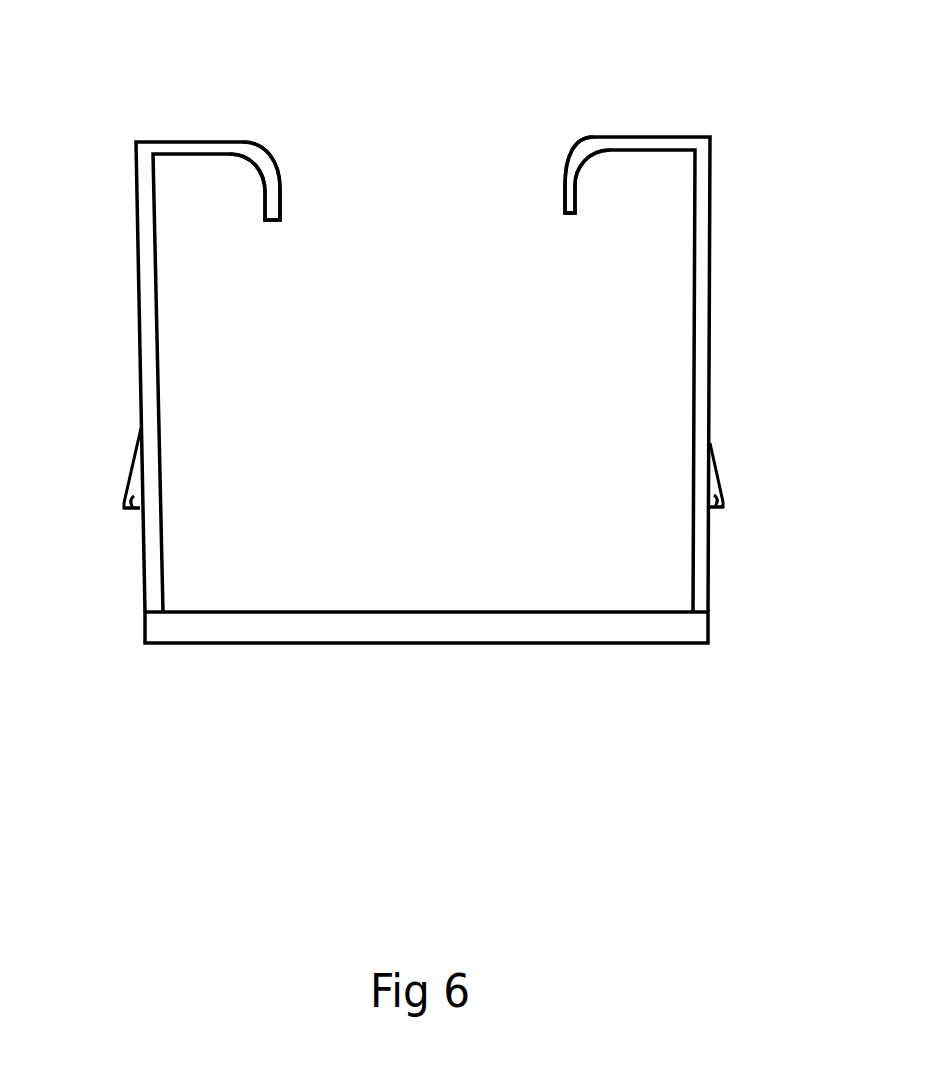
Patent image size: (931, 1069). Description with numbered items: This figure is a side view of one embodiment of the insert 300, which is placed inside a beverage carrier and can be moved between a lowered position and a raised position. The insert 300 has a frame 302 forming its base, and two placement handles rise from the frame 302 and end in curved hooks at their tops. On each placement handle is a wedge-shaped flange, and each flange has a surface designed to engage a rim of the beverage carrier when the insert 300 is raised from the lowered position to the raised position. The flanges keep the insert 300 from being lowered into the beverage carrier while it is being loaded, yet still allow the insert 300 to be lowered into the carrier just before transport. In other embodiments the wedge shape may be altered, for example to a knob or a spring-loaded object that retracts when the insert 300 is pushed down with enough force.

The insert 300 is at (482, 108).
The frame 302 is at (446, 622).